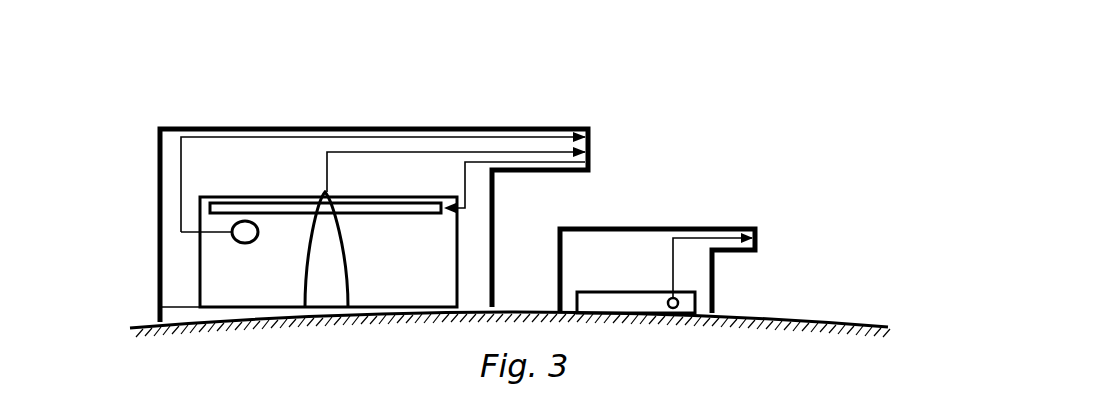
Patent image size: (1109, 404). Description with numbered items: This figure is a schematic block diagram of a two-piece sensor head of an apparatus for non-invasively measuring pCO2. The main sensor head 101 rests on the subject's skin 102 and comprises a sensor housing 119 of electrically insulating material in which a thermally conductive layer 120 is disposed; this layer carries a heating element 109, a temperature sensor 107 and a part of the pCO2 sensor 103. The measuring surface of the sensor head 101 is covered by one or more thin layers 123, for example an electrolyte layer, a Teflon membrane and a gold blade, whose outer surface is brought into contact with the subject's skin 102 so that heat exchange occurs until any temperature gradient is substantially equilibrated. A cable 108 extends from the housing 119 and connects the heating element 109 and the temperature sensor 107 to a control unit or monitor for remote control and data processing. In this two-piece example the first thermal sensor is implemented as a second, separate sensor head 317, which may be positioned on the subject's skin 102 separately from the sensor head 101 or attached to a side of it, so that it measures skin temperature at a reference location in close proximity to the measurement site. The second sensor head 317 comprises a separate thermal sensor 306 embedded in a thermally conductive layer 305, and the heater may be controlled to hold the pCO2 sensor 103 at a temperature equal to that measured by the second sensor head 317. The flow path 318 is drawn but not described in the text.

The sensor head 101 is at (157, 92).
The subject's skin 102 is at (810, 318).
The pCO2 sensor 103 is at (323, 218).
The second temperature sensor 107 is at (248, 243).
The cable 108 is at (553, 128).
The heating element 109 is at (362, 207).
The sensor housing 119 is at (158, 208).
The second thermally conducting plate 120 is at (270, 283).
The thin layers 123 is at (178, 313).
The thermally conductive layer 305 is at (610, 300).
The thermal sensor 306 is at (672, 298).
The second sensor head 317 is at (594, 228).
The air flow outlet 318 is at (738, 228).